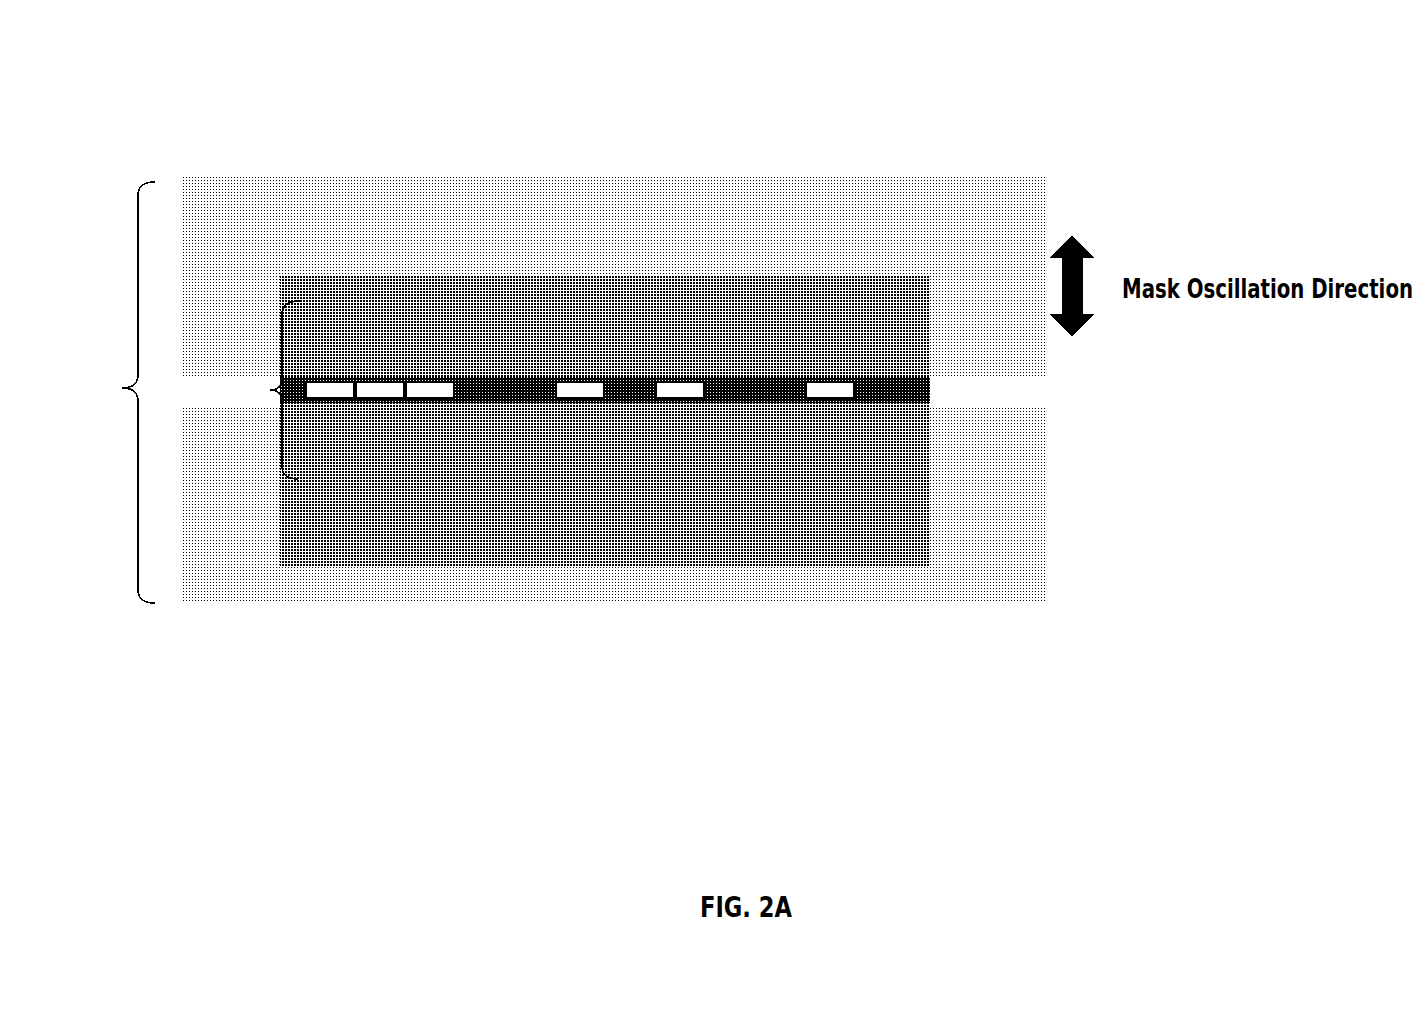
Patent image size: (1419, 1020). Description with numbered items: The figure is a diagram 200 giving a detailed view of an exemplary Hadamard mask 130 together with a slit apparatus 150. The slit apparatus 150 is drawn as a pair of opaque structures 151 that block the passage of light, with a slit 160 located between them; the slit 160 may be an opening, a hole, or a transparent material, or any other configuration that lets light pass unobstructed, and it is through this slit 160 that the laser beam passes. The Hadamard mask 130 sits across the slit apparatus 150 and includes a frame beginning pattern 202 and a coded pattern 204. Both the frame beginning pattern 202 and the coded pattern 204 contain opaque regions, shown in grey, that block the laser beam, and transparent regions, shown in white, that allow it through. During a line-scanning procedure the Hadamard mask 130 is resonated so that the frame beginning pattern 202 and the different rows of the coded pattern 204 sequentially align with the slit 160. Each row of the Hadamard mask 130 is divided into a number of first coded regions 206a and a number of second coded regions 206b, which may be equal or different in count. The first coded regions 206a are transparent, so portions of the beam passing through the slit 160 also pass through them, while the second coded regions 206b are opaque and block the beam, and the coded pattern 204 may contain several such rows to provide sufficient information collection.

The diagram 200 is at (78, 31).
The coded pattern 204 is at (262, 386).
The Hadamard mask 130 is at (309, 278).
The slit apparatus 150 is at (114, 392).
The opaque structures 151 is at (615, 235).
The slit 160 is at (208, 394).
The frame beginning pattern 202 is at (892, 503).
The first coded regions 206a is at (902, 364).
The second coded regions 206b is at (883, 303).